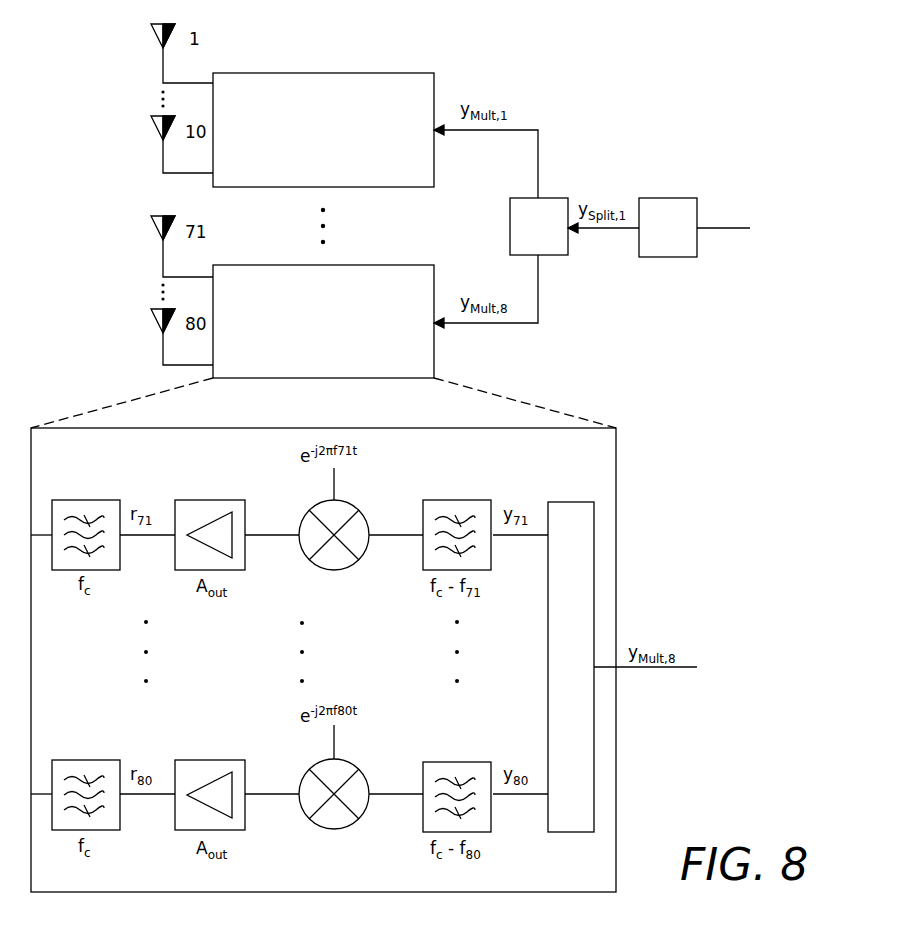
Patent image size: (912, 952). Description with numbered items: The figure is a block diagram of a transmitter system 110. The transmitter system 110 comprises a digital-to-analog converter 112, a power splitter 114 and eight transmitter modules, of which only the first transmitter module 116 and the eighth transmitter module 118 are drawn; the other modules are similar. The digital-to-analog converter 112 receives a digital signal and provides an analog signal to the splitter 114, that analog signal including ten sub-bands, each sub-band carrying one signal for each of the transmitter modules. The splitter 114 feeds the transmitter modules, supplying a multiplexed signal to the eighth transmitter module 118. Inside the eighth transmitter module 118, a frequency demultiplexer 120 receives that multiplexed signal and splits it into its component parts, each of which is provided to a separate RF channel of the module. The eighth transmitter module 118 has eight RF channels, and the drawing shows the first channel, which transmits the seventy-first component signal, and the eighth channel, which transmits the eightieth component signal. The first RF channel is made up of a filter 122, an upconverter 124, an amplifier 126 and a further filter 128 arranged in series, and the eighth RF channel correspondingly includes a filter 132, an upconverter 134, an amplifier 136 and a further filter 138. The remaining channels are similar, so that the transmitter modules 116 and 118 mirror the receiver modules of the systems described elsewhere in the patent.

The transmitter system 110 is at (737, 723).
The digital-to-analog converter 112 is at (665, 198).
The power splitter 114 is at (568, 198).
The first transmitter module 116 is at (404, 73).
The eighth transmitter module 118 is at (404, 265).
The frequency demultiplexer 120 is at (571, 502).
The filter 122 is at (458, 500).
The upconverter 124 is at (334, 570).
The amplifier 126 is at (193, 500).
The further filter 128 is at (84, 500).
The filter 132 is at (458, 762).
The upconverter 134 is at (334, 829).
The amplifier 136 is at (211, 760).
The further filter 138 is at (84, 760).